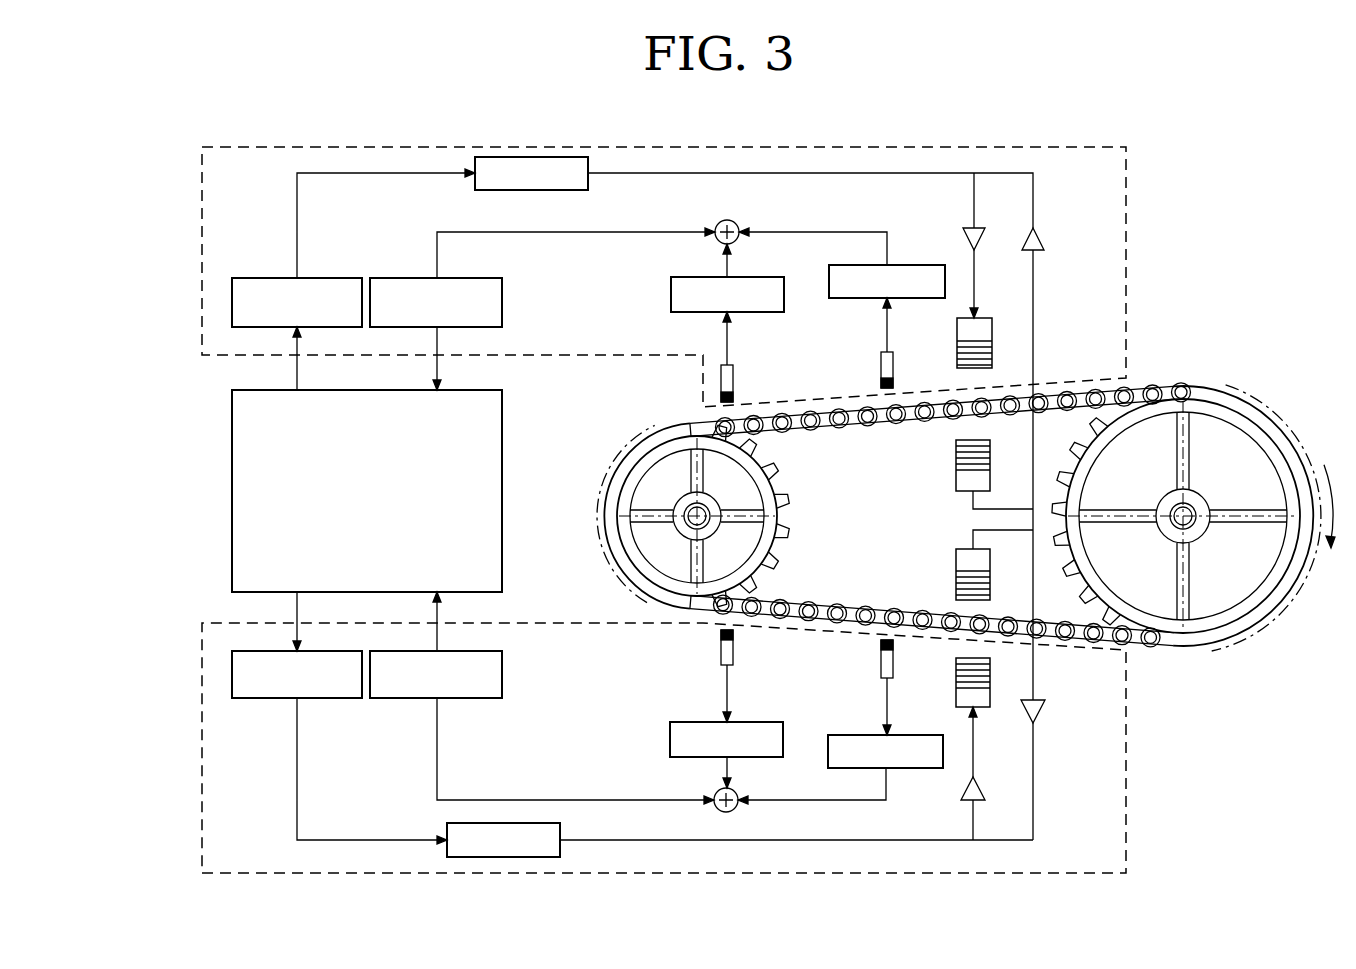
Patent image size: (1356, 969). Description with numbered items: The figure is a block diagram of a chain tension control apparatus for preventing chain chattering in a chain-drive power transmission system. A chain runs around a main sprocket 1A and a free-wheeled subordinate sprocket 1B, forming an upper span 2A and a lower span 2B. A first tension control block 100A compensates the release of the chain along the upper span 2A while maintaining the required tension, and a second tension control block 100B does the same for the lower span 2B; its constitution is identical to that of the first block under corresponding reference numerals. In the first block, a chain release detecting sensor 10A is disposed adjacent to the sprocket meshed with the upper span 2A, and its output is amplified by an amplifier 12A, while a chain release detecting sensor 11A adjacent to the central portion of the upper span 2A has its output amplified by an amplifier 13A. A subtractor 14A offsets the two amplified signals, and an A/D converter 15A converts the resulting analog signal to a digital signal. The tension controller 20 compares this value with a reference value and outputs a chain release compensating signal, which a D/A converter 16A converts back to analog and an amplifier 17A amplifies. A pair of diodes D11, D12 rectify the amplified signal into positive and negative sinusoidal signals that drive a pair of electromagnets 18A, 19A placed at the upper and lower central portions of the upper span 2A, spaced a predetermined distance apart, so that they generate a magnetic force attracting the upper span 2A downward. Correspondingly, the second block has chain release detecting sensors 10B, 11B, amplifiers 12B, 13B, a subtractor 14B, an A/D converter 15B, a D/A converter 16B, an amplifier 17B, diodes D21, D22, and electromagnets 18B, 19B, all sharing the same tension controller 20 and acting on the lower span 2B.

The main sprocket 1A is at (1226, 432).
The free wheeled subordinate sprocket 1B is at (661, 468).
The upper span of the chain 2A is at (853, 421).
The lower span of the chain 2B is at (853, 610).
The chain release detecting sensor 10A is at (734, 382).
The chain release detecting sensor 10B is at (720, 650).
The chain release detecting sensor 11A is at (880, 372).
The chain release detecting sensor 11B is at (880, 660).
The amplifier 12A is at (671, 295).
The amplifier 12B is at (670, 742).
The amplifier 13A is at (918, 276).
The amplifier 13B is at (901, 763).
The subtractor 14A is at (736, 222).
The subtractor 14B is at (712, 794).
The A/D converter 15A is at (418, 278).
The A/D converter 15B is at (408, 698).
The D/A converter 16A is at (278, 278).
The D/A converter 16B is at (270, 698).
The amplifier 17A is at (566, 190).
The amplifier 17B is at (514, 823).
The electromagnet 18A is at (957, 342).
The electromagnet 18B is at (956, 700).
The electromagnet 19A is at (956, 469).
The electromagnet 19B is at (956, 566).
The tension controller 20 is at (232, 476).
The first tension control block 100A is at (1120, 241).
The second tension control block 100B is at (1120, 791).
The diode D11 is at (992, 245).
The diode D12 is at (1056, 235).
The diode D21 is at (992, 773).
The diode D22 is at (1056, 717).